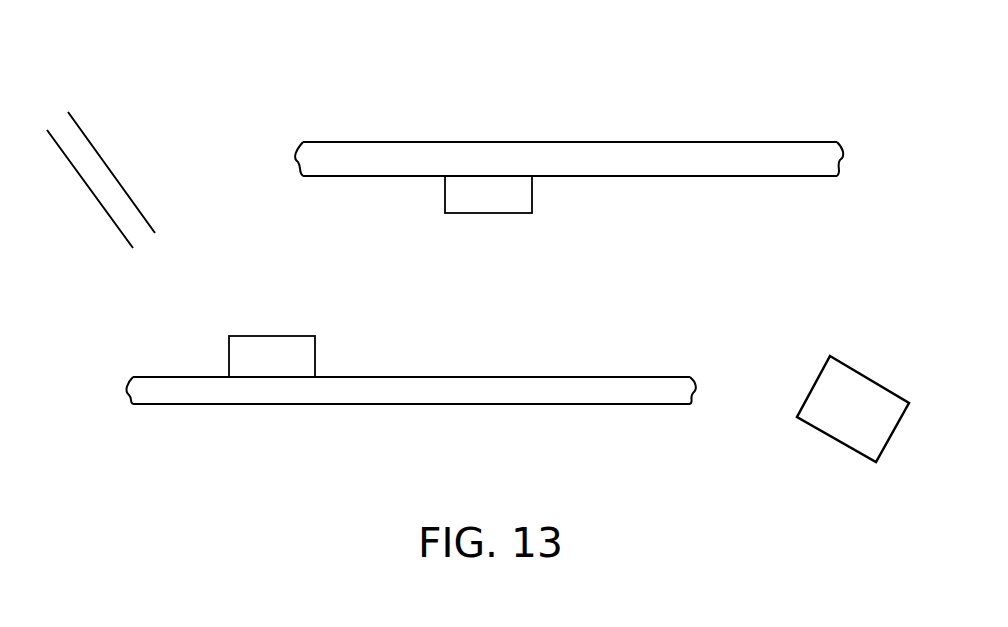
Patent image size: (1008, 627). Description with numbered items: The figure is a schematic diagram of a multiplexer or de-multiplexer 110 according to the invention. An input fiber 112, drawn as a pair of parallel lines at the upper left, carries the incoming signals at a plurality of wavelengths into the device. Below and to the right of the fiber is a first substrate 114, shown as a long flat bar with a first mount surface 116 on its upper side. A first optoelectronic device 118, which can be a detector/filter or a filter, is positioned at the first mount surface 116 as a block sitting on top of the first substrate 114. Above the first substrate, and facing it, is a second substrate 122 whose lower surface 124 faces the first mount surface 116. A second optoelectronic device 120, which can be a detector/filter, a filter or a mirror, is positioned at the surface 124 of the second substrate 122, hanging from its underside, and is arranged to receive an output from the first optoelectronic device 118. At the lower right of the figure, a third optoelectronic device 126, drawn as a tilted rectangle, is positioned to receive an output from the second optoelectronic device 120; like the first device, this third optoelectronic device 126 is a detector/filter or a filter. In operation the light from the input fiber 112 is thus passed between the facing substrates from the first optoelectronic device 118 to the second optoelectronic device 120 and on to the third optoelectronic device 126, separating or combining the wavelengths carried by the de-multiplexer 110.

The de-multiplexer 110 is at (338, 467).
The input fiber 112 is at (100, 178).
The first substrate 114 is at (417, 398).
The first mount surface 116 is at (555, 375).
The first optoelectronic device 118 is at (265, 337).
The second optoelectronic device 120 is at (508, 212).
The second substrate 122 is at (707, 153).
The surface 124 is at (743, 177).
The third optoelectronic device 126 is at (843, 428).